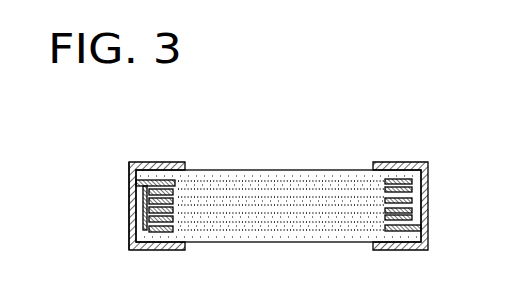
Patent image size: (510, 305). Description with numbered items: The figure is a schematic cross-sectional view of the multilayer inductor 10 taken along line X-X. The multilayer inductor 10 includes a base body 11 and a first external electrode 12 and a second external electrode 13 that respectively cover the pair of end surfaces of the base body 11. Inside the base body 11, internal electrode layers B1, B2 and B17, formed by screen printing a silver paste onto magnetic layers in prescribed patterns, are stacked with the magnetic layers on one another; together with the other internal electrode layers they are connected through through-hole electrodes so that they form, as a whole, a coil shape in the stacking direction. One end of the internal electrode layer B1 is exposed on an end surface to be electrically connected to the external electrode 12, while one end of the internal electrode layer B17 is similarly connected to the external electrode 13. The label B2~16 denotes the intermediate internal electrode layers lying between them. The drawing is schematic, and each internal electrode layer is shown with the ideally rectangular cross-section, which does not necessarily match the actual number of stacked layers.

The multilayer inductor 10 is at (284, 150).
The base body 11 is at (228, 169).
The first external electrode 12 is at (129, 196).
The second external electrode 13 is at (428, 190).
The inner electrode layer 16 is at (128, 214).
The internal electrode layer B1 is at (146, 162).
The internal electrode layer B2 is at (88, 206).
The internal electrode layer B17 is at (412, 250).